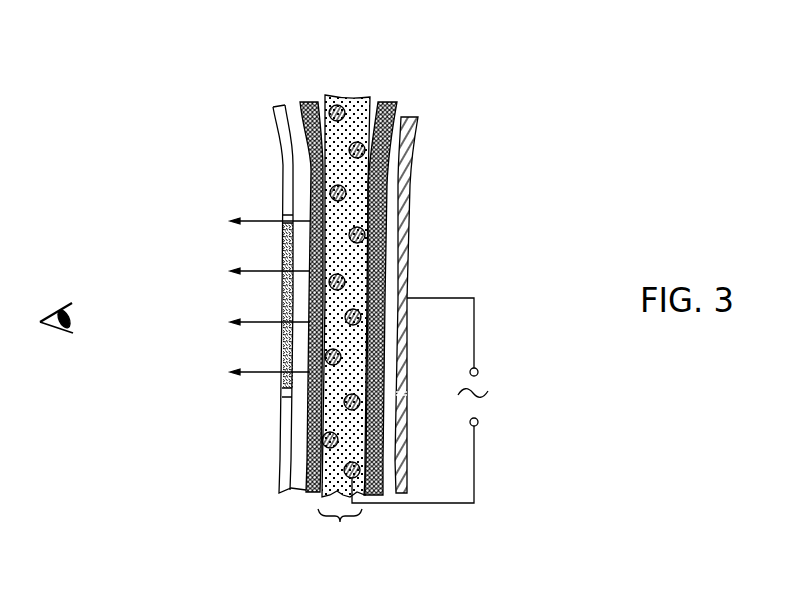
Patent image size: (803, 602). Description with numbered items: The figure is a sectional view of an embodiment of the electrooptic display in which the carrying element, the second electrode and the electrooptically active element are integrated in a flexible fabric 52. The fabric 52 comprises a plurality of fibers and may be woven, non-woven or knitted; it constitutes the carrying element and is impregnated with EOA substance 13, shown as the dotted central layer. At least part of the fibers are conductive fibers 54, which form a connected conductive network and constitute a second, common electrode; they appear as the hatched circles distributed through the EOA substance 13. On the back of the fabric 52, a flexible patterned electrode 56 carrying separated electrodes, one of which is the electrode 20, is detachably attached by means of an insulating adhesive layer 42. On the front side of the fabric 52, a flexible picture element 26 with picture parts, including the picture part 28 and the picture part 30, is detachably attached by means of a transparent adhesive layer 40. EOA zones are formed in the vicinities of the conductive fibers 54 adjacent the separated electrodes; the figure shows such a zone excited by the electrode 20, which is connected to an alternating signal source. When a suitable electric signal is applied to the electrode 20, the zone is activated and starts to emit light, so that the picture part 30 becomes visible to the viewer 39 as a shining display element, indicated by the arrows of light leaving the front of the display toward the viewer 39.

The EOA substance 13 is at (368, 97).
The electrode 20 is at (410, 273).
The flexible picture element 26 is at (297, 120).
The picture part 28 is at (282, 163).
The picture part 30 is at (283, 343).
The viewer 39 is at (57, 328).
The transparent adhesive layer 40 is at (304, 100).
The insulating adhesive layer 42 is at (392, 102).
The flexible fabric 52 is at (340, 529).
The conductive fibers 54 is at (333, 107).
The flexible patterned electrode 56 is at (404, 118).